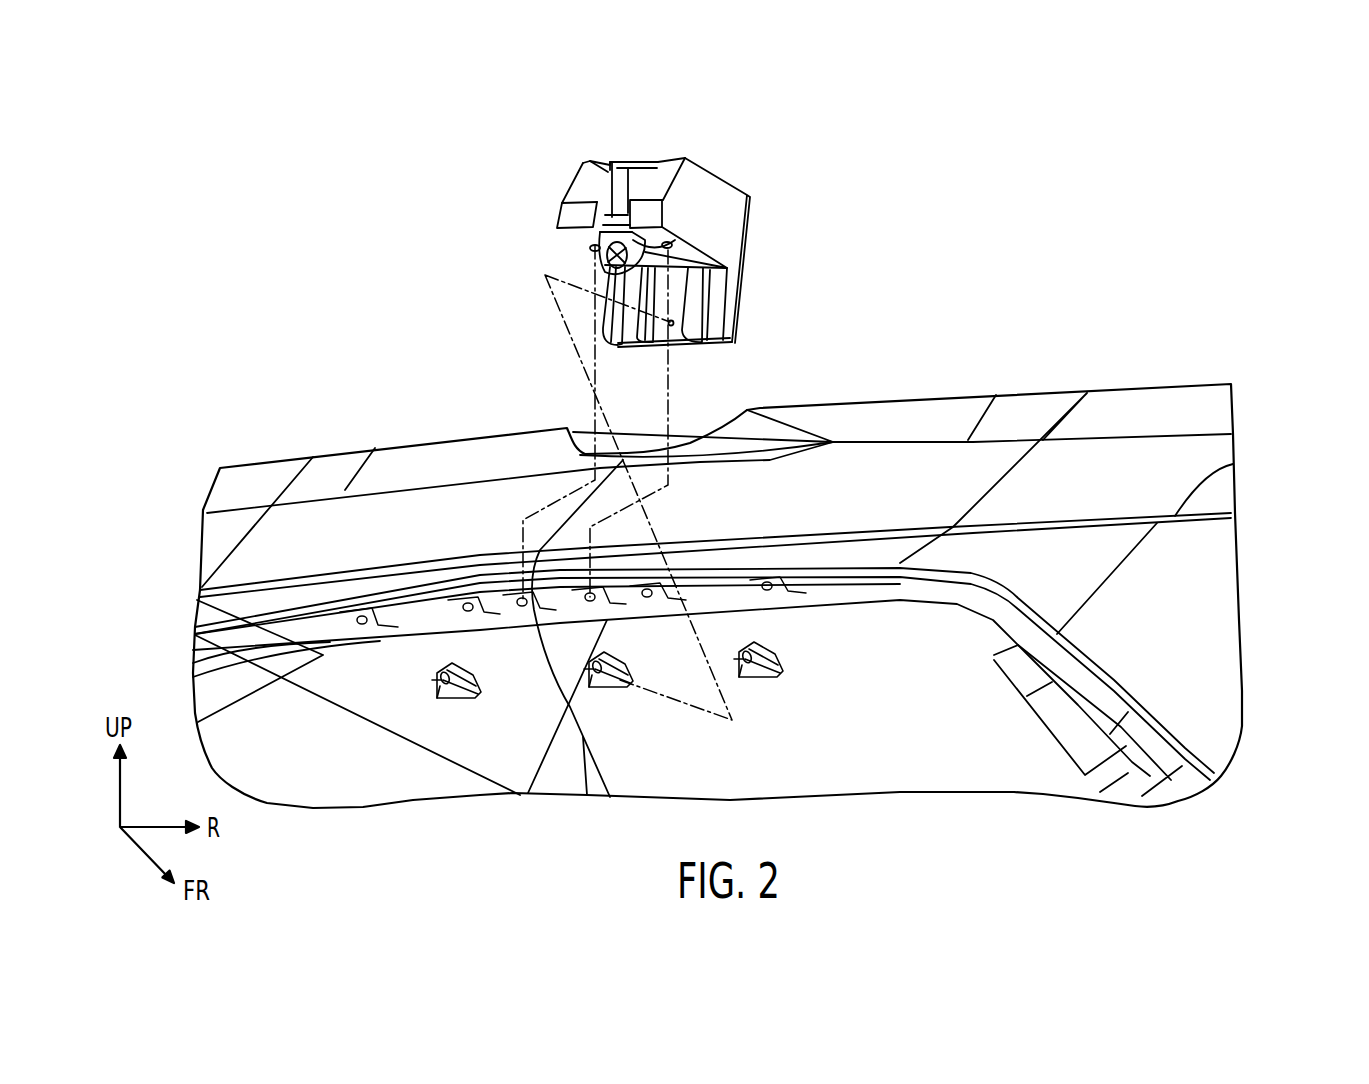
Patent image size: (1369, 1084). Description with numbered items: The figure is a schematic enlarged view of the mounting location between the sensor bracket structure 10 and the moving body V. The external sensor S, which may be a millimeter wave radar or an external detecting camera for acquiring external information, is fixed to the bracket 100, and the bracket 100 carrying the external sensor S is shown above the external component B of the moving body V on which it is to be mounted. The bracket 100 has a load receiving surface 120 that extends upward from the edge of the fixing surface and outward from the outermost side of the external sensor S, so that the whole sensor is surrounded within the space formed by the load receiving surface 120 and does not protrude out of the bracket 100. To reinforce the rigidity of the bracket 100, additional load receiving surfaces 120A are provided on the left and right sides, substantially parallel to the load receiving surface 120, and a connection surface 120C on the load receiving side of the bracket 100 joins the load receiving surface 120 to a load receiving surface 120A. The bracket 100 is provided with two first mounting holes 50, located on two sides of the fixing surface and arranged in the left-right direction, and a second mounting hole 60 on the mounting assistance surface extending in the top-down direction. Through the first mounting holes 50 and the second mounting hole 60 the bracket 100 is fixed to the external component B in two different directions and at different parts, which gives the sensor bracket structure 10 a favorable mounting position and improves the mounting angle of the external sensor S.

The sensor bracket structure 10 is at (712, 150).
The bracket 100 is at (760, 215).
The load receiving surface 120 is at (665, 177).
The load receiving surface 120A is at (577, 175).
The connection surface 120C is at (570, 217).
The first mounting hole 50 is at (592, 249).
The external sensor S is at (607, 263).
The second mounting hole 60 is at (672, 326).
The external component B is at (902, 470).
The moving body V is at (1198, 625).